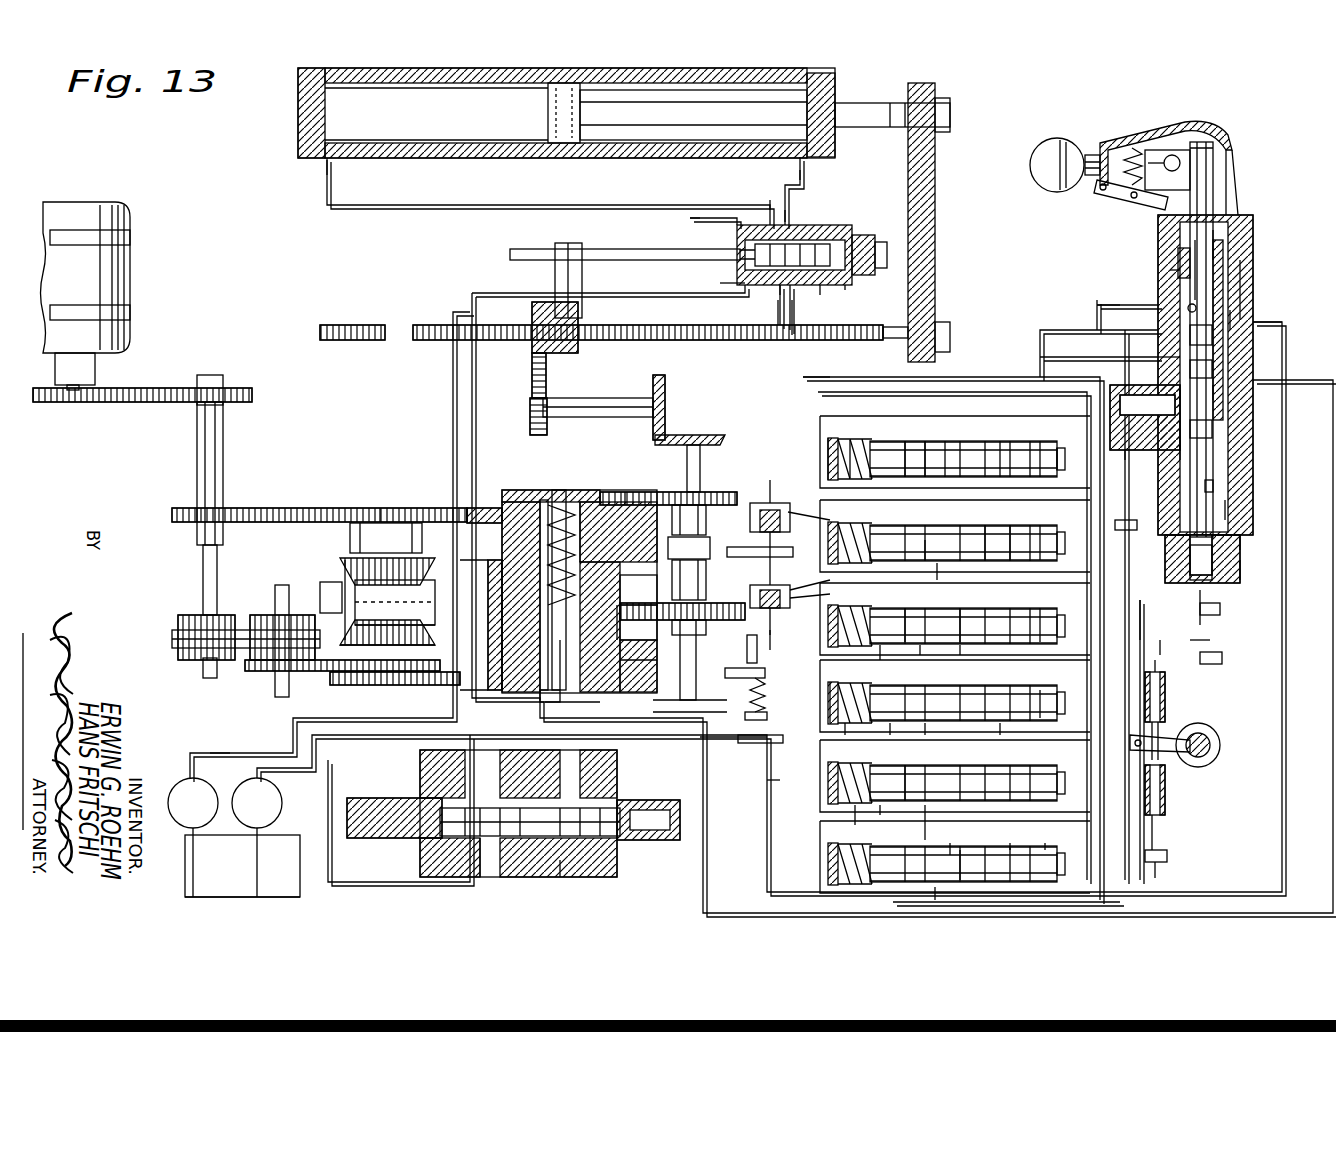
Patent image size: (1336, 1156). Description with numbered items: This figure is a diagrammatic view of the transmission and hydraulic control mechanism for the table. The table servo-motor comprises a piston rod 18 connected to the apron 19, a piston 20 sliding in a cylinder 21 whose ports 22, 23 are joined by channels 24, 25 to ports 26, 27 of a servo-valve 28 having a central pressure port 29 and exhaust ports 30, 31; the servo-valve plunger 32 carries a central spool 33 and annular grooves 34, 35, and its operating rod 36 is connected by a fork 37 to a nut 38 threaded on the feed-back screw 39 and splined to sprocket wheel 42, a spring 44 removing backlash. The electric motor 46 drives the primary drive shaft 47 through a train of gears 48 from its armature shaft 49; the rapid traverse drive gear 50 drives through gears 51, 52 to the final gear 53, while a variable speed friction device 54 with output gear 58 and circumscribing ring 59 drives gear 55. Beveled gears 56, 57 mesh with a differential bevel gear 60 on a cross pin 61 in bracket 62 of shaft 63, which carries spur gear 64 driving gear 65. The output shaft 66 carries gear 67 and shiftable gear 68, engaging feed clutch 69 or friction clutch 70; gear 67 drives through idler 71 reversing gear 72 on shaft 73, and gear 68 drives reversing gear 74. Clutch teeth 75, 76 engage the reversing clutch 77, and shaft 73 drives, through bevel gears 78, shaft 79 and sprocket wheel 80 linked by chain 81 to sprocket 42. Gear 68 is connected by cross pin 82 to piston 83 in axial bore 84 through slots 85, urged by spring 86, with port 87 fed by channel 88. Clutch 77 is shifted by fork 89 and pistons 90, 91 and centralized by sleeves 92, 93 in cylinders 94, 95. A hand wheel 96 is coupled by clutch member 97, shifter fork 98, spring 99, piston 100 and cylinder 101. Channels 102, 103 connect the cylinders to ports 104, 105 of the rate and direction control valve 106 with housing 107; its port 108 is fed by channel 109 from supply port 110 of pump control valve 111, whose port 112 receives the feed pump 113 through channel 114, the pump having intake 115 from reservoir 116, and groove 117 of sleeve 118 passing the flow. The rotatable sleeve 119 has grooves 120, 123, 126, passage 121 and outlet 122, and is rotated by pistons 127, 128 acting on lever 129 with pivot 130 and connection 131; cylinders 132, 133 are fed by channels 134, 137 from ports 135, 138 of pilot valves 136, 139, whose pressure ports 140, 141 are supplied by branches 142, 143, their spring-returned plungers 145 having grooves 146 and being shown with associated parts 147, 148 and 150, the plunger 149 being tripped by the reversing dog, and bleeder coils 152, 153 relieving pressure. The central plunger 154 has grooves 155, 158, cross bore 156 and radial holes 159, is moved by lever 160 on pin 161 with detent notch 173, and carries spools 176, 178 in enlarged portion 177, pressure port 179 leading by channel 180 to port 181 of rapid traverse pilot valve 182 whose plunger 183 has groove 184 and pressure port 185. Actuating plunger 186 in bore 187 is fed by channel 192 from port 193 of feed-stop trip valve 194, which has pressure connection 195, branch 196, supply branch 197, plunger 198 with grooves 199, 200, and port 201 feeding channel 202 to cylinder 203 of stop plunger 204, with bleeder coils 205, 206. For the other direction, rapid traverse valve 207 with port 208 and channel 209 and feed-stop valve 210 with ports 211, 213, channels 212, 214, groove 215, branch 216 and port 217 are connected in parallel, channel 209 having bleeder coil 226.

The piston rod 18 is at (872, 103).
The apron 19 is at (935, 195).
The piston 20 is at (566, 84).
The cylinder 21 is at (718, 90).
The port 22 is at (805, 170).
The port 23 is at (325, 170).
The channel 24 is at (770, 200).
The channel 25 is at (790, 215).
The port 26 is at (735, 222).
The port 27 is at (830, 238).
The servo-valve 28 is at (848, 288).
The central pressure port 29 is at (792, 340).
The exhaust port 30 is at (735, 290).
The exhaust port 31 is at (825, 288).
The servo-valve plunger 32 is at (740, 250).
The central spool 33 is at (790, 290).
The annular groove 34 is at (778, 340).
The annular groove 35 is at (862, 238).
The operating rod 36 is at (660, 249).
The fork 37 is at (582, 279).
The nut 38 is at (578, 343).
The servo feed-back screw 39 is at (372, 342).
The sprocket wheel 42 is at (532, 362).
The spring 44 is at (880, 250).
The electric motor 46 is at (130, 272).
The primary drive shaft 47 is at (223, 465).
The train of gears 48 is at (158, 386).
The armature shaft 49 is at (95, 375).
The rapid traverse drive gear 50 is at (225, 506).
The idler gear 51 is at (282, 506).
The gear 52 is at (390, 506).
The final gear 53 is at (485, 505).
The variable speed friction device 54 is at (245, 660).
The gear 55 is at (330, 672).
The beveled gear 56 is at (418, 568).
The beveled gear 57 is at (412, 645).
The output gear 58 is at (275, 680).
The circumscribing ring 59 is at (172, 638).
The differential bevel gear 60 is at (342, 575).
The cross pin 61 is at (322, 590).
The bracket 62 is at (415, 590).
The shaft 63 is at (410, 625).
The spur gear 64 is at (390, 686).
The gear 65 is at (540, 695).
The output shaft 66 is at (566, 500).
The gear 67 is at (592, 500).
The gear 68 is at (648, 605).
The feed clutch 69 is at (575, 655).
The friction clutch 70 is at (628, 575).
The intermediate idler 71 is at (632, 492).
The reversing gear 72 is at (672, 492).
The shaft 73 is at (687, 460).
The reversing gear 74 is at (655, 620).
The clutch teeth 75 is at (706, 518).
The clutch teeth 76 is at (672, 560).
The shiftable reversing clutch 77 is at (710, 546).
The bevel gears 78 is at (668, 432).
The shaft 79 is at (580, 398).
The sprocket wheel 80 is at (530, 420).
The chain 81 is at (532, 380).
The cross pin 82 is at (530, 600).
The piston 83 is at (622, 665).
The axial bore 84 is at (544, 500).
The elongated slots 85 is at (620, 625).
The spring 86 is at (560, 505).
The port 87 is at (545, 700).
The fluid supply channel 88 is at (585, 705).
The shifter fork 89 is at (706, 578).
The piston 90 is at (755, 503).
The piston 91 is at (790, 598).
The sleeve 92 is at (790, 590).
The sleeve 93 is at (792, 525).
The cylinder 94 is at (772, 632).
The cylinder 95 is at (772, 500).
The hand wheel 96 is at (750, 592).
The shiftable clutch member 97 is at (680, 655).
The shifter fork 98 is at (780, 740).
The spring 99 is at (765, 694).
The fluid operable piston 100 is at (765, 670).
The cylinder 101 is at (758, 650).
The channel 102 is at (770, 780).
The channel 103 is at (1000, 377).
The port 104 is at (1255, 290).
The port 105 is at (1186, 306).
The rate and direction control valve 106 is at (1205, 255).
The housing 107 is at (1240, 535).
The port 108 is at (1165, 355).
The channel 109 is at (755, 742).
The pressure supply port 110 is at (475, 752).
The rapid traverse pump control valve 111 is at (580, 877).
The port 112 is at (490, 880).
The feed supply pump 113 is at (175, 778).
The channel 114 is at (208, 752).
The intake 115 is at (185, 850).
The reservoir 116 is at (185, 884).
The annular groove 117 is at (425, 855).
The sleeve 118 is at (615, 858).
The rotatable sleeve 119 is at (1222, 215).
The annular groove 120 is at (1215, 335).
The interdrilled passage 121 is at (1285, 322).
The outlet 122 is at (1225, 290).
The annular groove 123 is at (1178, 262).
The annular groove 126 is at (1135, 300).
The piston 127 is at (1165, 790).
The piston 128 is at (1165, 708).
The lever 129 is at (1160, 735).
The pivot 130 is at (1175, 750).
The connection 131 is at (1220, 740).
The cylinder 132 is at (1165, 810).
The cylinder 133 is at (1165, 692).
The channel 134 is at (995, 728).
The port 135 is at (925, 728).
The pilot valve 136 is at (968, 690).
The channel 137 is at (1144, 611).
The port 138 is at (940, 445).
The pilot valve 139 is at (975, 445).
The pressure port 140 is at (900, 725).
The pressure port 141 is at (900, 445).
The branch channel 142 is at (845, 730).
The branch channel 143 is at (832, 440).
The plunger 145 is at (1008, 445).
The annular groove 146 is at (930, 450).
The spring 147 is at (870, 445).
The end plate 148 is at (832, 682).
The plunger 149 is at (1057, 710).
The stem 150 is at (1065, 460).
The bleeder coil 152 is at (1167, 856).
The bleeder coil 153 is at (1170, 650).
The central plunger 154 is at (1235, 180).
The annular groove 155 is at (1218, 240).
The cross bore 156 is at (1178, 278).
The annular groove 158 is at (1235, 325).
The radial holes 159 is at (1190, 368).
The lever 160 is at (1100, 148).
The pin 161 is at (1174, 155).
The V-notch 173 is at (1218, 390).
The enlarged spool 176 is at (1220, 450).
The enlarged portion 177 is at (1215, 430).
The spool 178 is at (1215, 405).
The pressure port 179 is at (1175, 440).
The channel 180 is at (1125, 465).
The port 181 is at (880, 525).
The rapid traverse pilot control valve 182 is at (1005, 560).
The plunger 183 is at (1045, 555).
The annular groove 184 is at (980, 560).
The pressure port 185 is at (925, 560).
The actuating plunger 186 is at (1215, 488).
The bore 187 is at (1225, 510).
The channel 192 is at (1212, 618).
The port 193 is at (895, 605).
The feed-stop trip valve 194 is at (900, 645).
The interdrilled connection 195 is at (922, 650).
The branch 196 is at (937, 570).
The branch 197 is at (1085, 430).
The plunger 198 is at (1057, 625).
The annular groove 199 is at (912, 622).
The annular groove 200 is at (965, 625).
The port 201 is at (962, 650).
The channel 202 is at (1212, 640).
The cylinder 203 is at (1190, 562).
The stop plunger 204 is at (1240, 565).
The bleeder coil 205 is at (1220, 608).
The bleeder coil 206 is at (1222, 658).
The rapid traverse valve 207 is at (950, 770).
The port 208 is at (880, 810).
The channel 209 is at (995, 848).
The feed-stop valve 210 is at (880, 840).
The port 211 is at (895, 860).
The channel 212 is at (1060, 897).
The port 213 is at (948, 848).
The channel 214 is at (1050, 848).
The annular groove 215 is at (940, 875).
The branch 216 is at (925, 832).
The port 217 is at (918, 784).
The bleeder coil 226 is at (1115, 525).